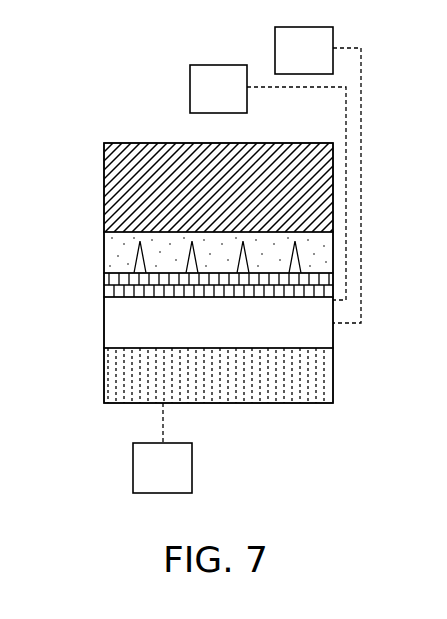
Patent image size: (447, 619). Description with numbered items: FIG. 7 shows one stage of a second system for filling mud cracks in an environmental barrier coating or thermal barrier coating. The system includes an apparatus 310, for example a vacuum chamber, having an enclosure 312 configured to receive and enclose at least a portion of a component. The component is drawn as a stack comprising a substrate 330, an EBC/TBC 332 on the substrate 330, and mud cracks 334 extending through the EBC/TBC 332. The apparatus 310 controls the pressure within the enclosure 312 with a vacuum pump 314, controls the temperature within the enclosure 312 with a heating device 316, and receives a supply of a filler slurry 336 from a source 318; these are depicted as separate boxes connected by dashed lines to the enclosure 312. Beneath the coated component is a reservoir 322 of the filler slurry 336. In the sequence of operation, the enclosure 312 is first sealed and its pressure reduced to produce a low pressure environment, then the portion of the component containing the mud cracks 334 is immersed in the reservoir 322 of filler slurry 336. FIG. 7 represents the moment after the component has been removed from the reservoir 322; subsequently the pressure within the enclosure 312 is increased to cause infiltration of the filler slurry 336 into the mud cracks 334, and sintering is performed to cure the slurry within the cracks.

The apparatus 310 is at (103, 331).
The enclosure 312 is at (237, 334).
The vacuum pump 314 is at (234, 99).
The heating device 316 is at (320, 60).
The source 318 is at (178, 477).
The reservoir 322 is at (108, 389).
The substrate 330 is at (113, 188).
The EBC/TBC 332 is at (107, 245).
The mud cracks 334 is at (137, 270).
The filler slurry 336 is at (105, 290).